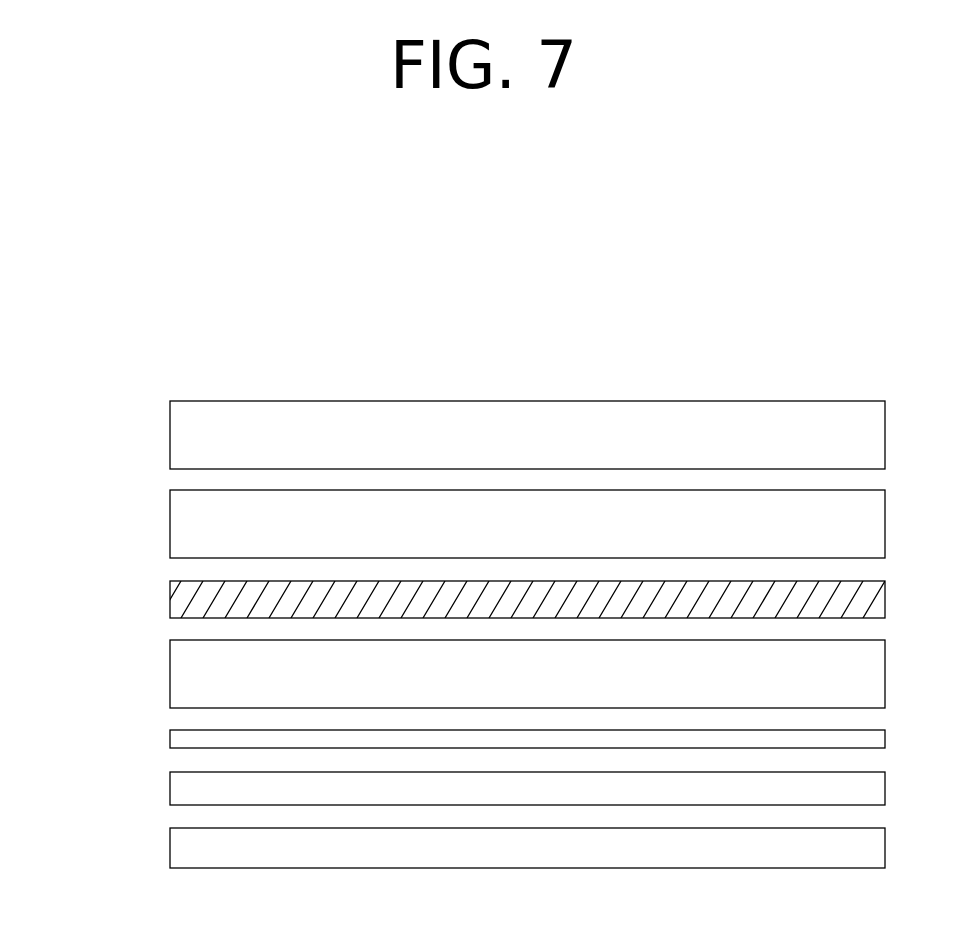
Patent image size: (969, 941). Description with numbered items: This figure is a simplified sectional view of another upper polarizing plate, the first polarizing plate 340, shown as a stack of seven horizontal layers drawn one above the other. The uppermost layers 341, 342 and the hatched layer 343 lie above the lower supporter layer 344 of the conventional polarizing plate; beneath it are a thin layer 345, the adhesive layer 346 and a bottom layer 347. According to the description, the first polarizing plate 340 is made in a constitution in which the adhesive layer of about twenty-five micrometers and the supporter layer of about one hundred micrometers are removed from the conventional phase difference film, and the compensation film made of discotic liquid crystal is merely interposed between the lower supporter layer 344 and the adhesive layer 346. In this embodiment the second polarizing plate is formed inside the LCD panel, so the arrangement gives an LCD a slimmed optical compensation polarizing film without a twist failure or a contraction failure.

The first polarizing plate 340 is at (780, 357).
The first layer 341 is at (185, 432).
The second layer 342 is at (185, 522).
The hatched layer 343 is at (185, 597).
The lower supporter layer 344 is at (185, 667).
The fifth layer 345 is at (185, 736).
The adhesive layer 346 is at (185, 789).
The seventh layer 347 is at (185, 847).